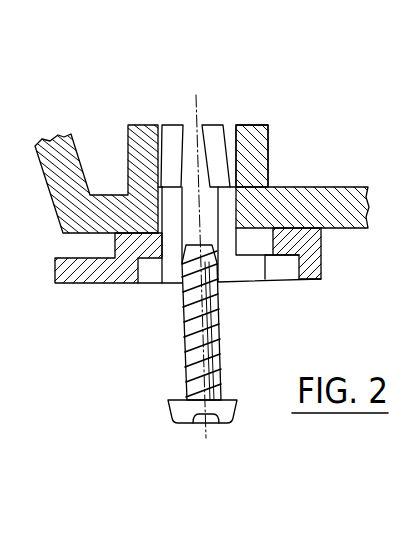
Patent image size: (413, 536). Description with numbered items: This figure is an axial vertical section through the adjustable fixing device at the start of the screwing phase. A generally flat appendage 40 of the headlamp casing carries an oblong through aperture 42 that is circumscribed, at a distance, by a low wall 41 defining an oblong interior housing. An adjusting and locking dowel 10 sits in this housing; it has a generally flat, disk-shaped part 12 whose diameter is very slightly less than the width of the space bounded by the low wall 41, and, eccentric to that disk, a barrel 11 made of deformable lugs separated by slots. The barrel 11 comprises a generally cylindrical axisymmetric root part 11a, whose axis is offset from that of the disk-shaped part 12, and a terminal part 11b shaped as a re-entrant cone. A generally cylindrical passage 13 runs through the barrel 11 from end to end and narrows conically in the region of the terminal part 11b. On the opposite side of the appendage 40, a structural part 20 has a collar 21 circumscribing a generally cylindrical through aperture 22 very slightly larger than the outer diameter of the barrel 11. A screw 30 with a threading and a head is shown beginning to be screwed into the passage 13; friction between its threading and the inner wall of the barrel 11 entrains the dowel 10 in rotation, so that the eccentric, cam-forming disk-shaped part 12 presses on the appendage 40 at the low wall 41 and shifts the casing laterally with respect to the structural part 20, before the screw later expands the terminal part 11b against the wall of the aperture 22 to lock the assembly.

The adjusting and locking dowel 10 is at (152, 294).
The barrel 11 is at (214, 140).
The root part 11a is at (170, 212).
The terminal part 11b is at (172, 135).
The disk-shaped part 12 is at (241, 282).
The passage 13 is at (207, 211).
The structural part 20 is at (315, 178).
The collar 21 is at (268, 131).
The through aperture 22 is at (235, 123).
The screw 30 is at (187, 350).
The appendage 40 is at (324, 251).
The low wall 41 is at (317, 280).
The oblong through aperture 42 is at (261, 254).